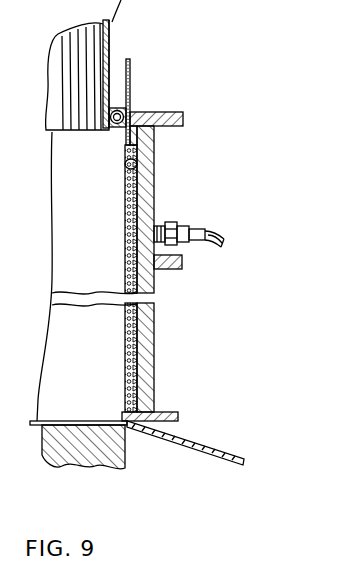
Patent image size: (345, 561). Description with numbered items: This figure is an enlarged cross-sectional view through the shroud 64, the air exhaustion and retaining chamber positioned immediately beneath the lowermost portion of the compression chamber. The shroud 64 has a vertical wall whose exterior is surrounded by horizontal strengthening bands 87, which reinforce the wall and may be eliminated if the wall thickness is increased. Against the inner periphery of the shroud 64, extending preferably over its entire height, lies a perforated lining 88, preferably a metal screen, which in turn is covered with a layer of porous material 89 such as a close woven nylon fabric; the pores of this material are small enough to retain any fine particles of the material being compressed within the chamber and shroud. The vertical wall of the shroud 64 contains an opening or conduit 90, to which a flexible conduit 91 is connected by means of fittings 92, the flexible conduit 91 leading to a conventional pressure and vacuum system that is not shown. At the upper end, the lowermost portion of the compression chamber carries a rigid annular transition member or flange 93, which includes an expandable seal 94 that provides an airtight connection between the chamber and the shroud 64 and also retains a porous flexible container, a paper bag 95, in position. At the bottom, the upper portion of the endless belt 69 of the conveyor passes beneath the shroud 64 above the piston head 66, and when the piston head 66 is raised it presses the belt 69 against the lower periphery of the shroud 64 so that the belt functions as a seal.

The shroud 64 is at (154, 382).
The piston head 66 is at (125, 462).
The endless belt 69 is at (244, 462).
The horizontal strengthening bands 87 is at (181, 268).
The perforated lining 88 is at (146, 196).
The layer of porous material 89 is at (137, 166).
The opening or conduit 90 is at (158, 224).
The flexible conduit 91 is at (225, 238).
The fittings 92 is at (183, 225).
The rigid annular transition member or flange 93 is at (108, 130).
The expandable seal 94 is at (131, 109).
The paper bag 95 is at (131, 74).